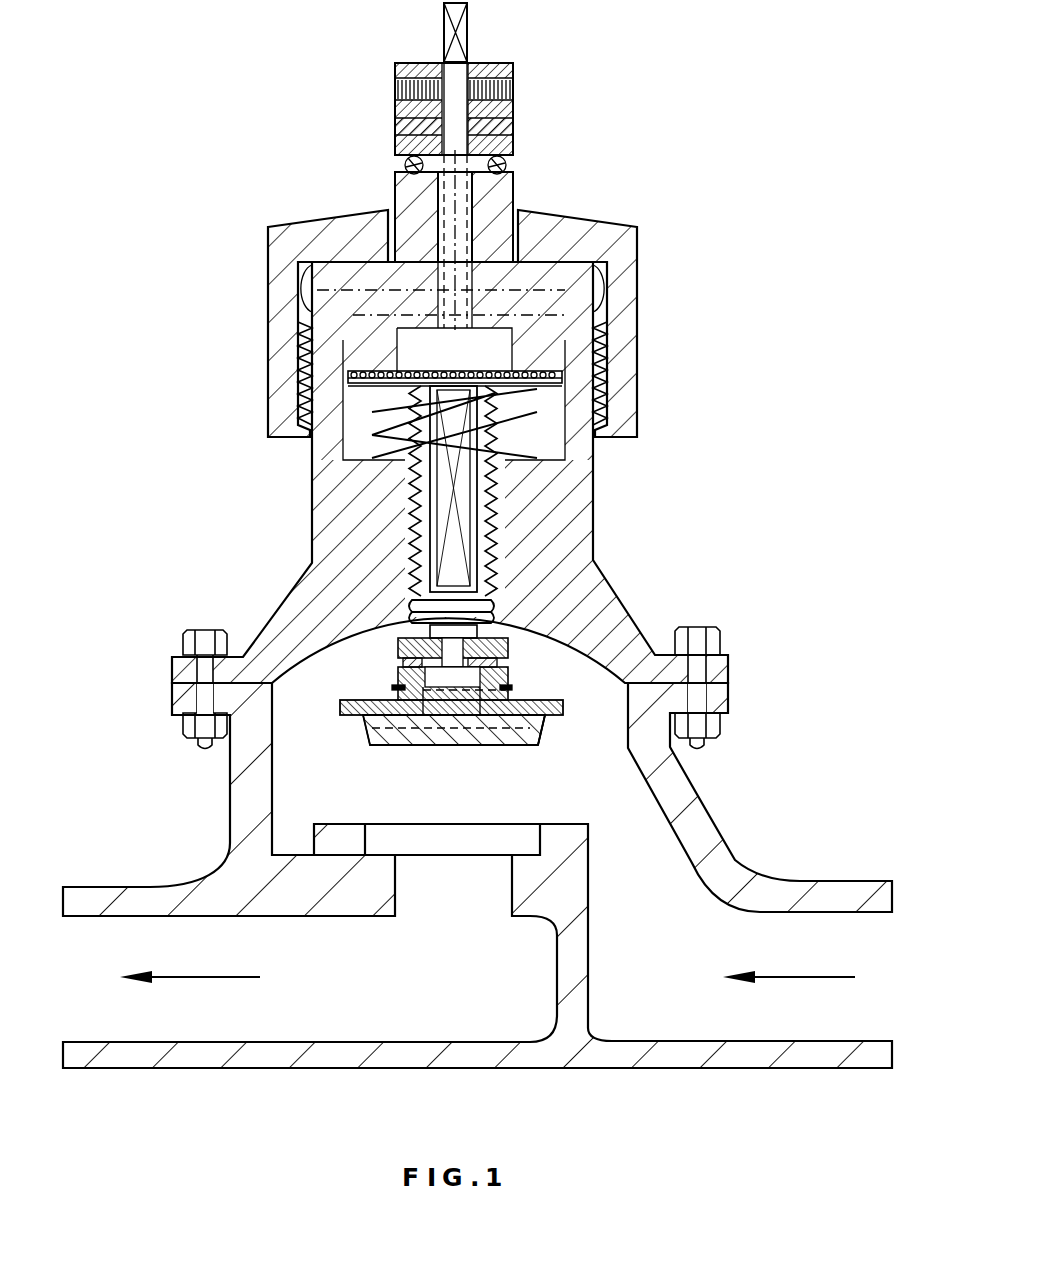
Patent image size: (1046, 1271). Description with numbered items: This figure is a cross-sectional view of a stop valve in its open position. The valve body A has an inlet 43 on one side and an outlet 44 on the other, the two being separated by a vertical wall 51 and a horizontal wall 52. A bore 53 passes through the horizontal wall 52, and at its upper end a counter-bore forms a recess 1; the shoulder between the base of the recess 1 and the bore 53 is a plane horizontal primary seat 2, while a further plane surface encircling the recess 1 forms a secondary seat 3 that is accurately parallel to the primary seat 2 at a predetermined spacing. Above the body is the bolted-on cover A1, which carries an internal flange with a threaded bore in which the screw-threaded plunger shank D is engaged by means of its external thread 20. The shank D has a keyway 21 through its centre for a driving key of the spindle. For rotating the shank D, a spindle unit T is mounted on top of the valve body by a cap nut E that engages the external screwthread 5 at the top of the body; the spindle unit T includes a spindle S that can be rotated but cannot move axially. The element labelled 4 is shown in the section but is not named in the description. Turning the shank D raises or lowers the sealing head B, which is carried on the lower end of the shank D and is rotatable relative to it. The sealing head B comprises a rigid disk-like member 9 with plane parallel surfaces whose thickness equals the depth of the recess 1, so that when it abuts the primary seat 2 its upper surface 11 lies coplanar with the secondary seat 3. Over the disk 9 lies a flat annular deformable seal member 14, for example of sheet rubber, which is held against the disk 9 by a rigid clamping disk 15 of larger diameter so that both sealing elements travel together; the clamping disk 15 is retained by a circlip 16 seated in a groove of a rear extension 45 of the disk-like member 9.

The spindle S is at (470, 41).
The spindle unit T is at (522, 192).
The cap nut E is at (637, 322).
The external screwthread 5 is at (607, 368).
The bonnet body 4 is at (345, 497).
The keyway 21 is at (413, 522).
The external thread 20 is at (413, 560).
The plunger shank D is at (505, 530).
The cover A1 is at (690, 604).
The valve body A is at (755, 838).
The clamping disk 15 is at (360, 688).
The rear extension 45 is at (508, 678).
The circlip 16 is at (628, 683).
The deformable seal member 14 is at (342, 706).
The upper surface 11 is at (372, 722).
The disk-like member 9 is at (537, 728).
The sealing head B is at (356, 750).
The recess 1 is at (393, 798).
The primary seat 2 is at (517, 843).
The secondary seat 3 is at (578, 800).
The horizontal wall 52 is at (353, 897).
The bore 53 is at (510, 893).
The vertical wall 51 is at (572, 962).
The outlet 44 is at (190, 964).
The inlet 43 is at (789, 964).